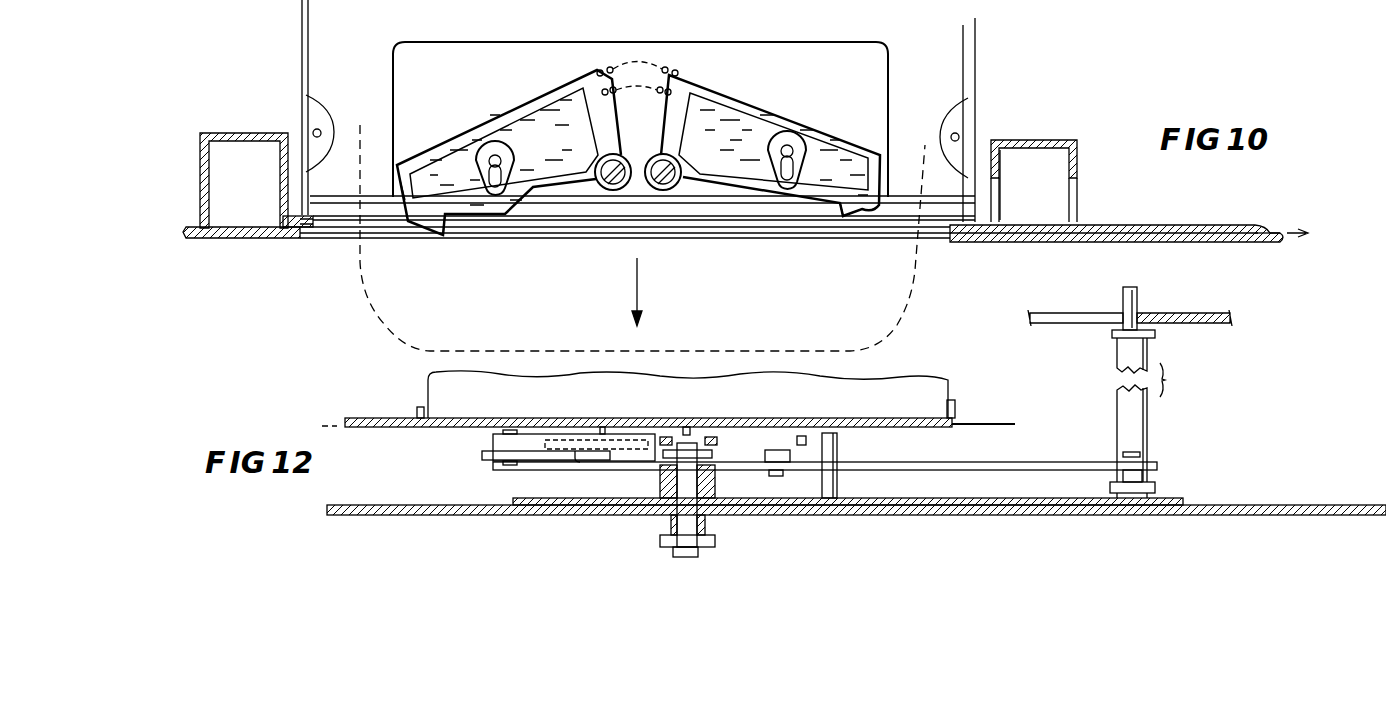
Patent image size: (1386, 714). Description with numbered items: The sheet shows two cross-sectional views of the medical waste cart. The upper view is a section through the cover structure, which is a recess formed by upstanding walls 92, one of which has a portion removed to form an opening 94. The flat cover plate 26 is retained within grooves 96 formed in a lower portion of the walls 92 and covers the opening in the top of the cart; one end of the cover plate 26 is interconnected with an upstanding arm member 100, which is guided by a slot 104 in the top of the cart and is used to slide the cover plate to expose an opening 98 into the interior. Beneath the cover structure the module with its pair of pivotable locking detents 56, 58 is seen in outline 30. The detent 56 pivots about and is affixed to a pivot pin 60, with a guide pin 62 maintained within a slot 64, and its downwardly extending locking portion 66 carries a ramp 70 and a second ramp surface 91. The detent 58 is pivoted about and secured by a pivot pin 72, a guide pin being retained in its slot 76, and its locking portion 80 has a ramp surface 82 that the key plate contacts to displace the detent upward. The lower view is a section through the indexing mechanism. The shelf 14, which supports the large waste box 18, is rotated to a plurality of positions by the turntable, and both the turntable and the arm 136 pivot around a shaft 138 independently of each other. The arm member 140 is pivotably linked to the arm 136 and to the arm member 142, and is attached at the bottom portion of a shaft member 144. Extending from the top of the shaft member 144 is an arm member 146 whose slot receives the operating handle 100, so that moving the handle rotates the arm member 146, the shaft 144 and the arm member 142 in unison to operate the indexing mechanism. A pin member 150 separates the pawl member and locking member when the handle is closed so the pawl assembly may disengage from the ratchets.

In FIG. 12, the shelf 14 is at (418, 421).
In FIG. 12, the waste box 18 is at (436, 386).
In FIG. 10, the cover plate 26 is at (1203, 225).
In FIG. 10, the hood outline 30 is at (905, 307).
In FIG. 10, the locking detent 56 is at (557, 74).
In FIG. 10, the locking detent 58 is at (700, 88).
In FIG. 10, the pivot pin 60 is at (602, 156).
In FIG. 10, the guide pin 62 is at (510, 158).
In FIG. 10, the slot 64 is at (470, 172).
In FIG. 10, the locking portion 66 is at (443, 236).
In FIG. 10, the ramp 70 is at (796, 163).
In FIG. 10, the pivot pin 72 is at (678, 163).
In FIG. 10, the slot 76 is at (763, 145).
In FIG. 10, the locking portion 80 is at (845, 216).
In FIG. 10, the ramp surface 82 is at (880, 200).
In FIG. 10, the second ramp surface 91 is at (533, 188).
In FIG. 10, the upstanding walls 92 is at (248, 133).
In FIG. 10, the opening 94 is at (1052, 190).
In FIG. 10, the grooves 96 is at (298, 238).
In FIG. 10, the opening 98 is at (327, 238).
In FIG. 12, the arm member 100 is at (1190, 293).
In FIG. 10, the slot 104 is at (1238, 246).
In FIG. 12, the slot 104 is at (1055, 288).
In FIG. 12, the arm 136 is at (578, 467).
In FIG. 12, the shaft 138 is at (708, 517).
In FIG. 12, the arm member 140 is at (975, 462).
In FIG. 12, the arm member 142 is at (1157, 467).
In FIG. 12, the shaft member 144 is at (1150, 423).
In FIG. 12, the arm member 146 is at (1155, 333).
In FIG. 12, the pin member 150 is at (839, 481).